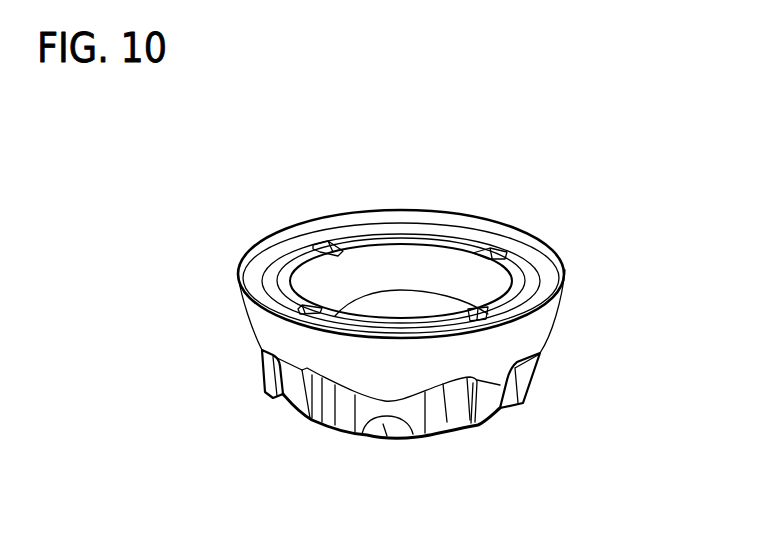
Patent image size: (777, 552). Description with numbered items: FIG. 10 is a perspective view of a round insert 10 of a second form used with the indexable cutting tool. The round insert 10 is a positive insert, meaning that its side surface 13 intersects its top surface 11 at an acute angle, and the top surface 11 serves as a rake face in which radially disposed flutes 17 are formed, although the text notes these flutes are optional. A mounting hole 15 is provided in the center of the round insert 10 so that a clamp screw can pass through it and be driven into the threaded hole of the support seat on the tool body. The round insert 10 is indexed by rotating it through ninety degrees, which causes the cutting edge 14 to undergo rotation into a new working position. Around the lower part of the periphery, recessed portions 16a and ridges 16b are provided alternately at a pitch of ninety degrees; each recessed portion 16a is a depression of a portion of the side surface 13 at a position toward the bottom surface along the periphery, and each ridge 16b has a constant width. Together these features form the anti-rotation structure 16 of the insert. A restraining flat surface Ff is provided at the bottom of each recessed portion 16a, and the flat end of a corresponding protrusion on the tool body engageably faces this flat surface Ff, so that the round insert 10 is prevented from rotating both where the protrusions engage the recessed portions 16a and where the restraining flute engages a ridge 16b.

The round insert 10 is at (538, 229).
The top surface 11 is at (363, 220).
The side surface 13 is at (545, 326).
The cutting edge 14 is at (563, 262).
The mounting hole 15 is at (412, 265).
The engaging protrusion 16 is at (367, 412).
The recessed portion 16a is at (533, 380).
The ridge 16b is at (490, 422).
The flute 17 is at (302, 308).
The restraining flat surface Ff is at (516, 400).